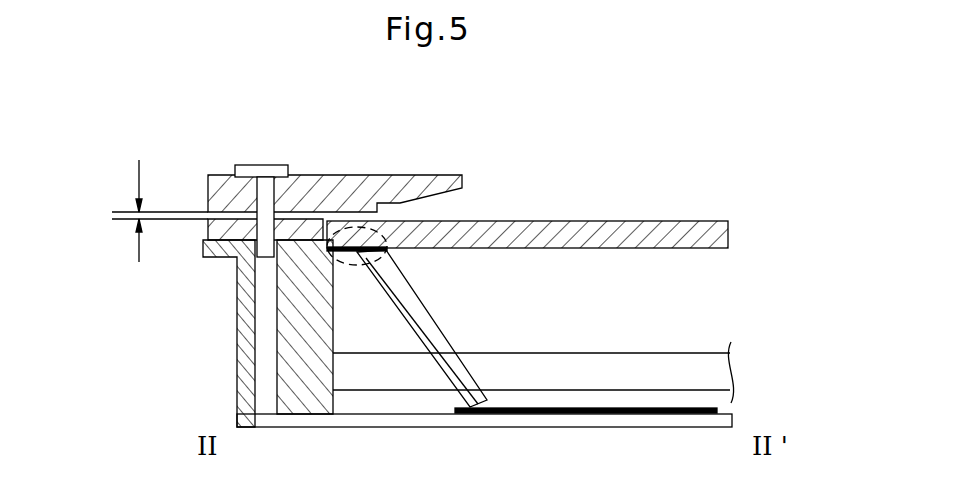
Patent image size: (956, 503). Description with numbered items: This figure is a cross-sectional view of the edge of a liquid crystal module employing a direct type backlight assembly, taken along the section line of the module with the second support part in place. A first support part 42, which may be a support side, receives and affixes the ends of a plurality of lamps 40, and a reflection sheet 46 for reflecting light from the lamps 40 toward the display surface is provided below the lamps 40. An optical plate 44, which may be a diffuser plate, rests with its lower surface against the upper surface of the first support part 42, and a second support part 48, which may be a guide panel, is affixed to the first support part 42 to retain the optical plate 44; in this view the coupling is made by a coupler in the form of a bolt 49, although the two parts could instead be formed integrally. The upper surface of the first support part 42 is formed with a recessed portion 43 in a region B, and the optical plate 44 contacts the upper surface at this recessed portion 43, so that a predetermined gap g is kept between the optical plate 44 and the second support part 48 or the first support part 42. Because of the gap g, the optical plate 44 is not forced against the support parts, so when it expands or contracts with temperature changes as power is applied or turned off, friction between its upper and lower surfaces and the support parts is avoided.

The lamps 40 is at (720, 376).
The first support part 42 is at (438, 328).
The recessed portion 43 is at (327, 243).
The optical plate 44 is at (678, 236).
The reflection sheet 46 is at (670, 407).
The second support part 48 is at (375, 176).
The bolt 49 is at (265, 165).
The gap g is at (148, 211).
The region B is at (353, 257).